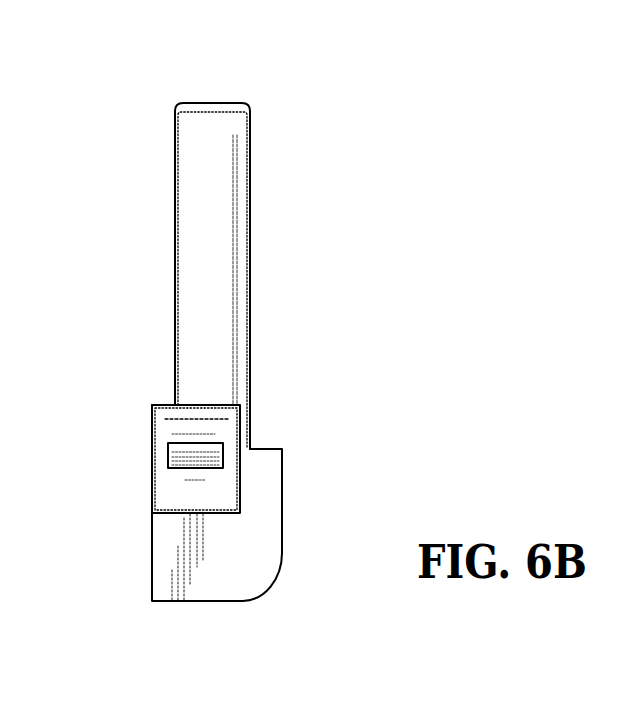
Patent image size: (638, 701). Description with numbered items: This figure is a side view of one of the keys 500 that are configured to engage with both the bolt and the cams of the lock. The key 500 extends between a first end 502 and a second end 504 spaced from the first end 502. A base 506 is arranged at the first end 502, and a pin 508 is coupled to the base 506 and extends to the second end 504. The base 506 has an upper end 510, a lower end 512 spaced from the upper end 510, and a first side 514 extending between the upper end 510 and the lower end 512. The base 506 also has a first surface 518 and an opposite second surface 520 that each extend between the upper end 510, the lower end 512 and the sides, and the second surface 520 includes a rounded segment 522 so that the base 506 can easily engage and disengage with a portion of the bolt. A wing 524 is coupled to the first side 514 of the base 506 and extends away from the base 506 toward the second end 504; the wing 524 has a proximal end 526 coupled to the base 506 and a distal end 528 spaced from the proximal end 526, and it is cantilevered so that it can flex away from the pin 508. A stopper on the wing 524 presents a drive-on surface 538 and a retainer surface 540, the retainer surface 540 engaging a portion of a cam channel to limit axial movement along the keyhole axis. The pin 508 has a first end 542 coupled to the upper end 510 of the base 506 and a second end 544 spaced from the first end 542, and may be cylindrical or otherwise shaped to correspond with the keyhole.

The key 500 is at (118, 81).
The first end 502 is at (183, 611).
The second end 504 is at (252, 101).
The base 506 is at (268, 473).
The pin 508 is at (220, 210).
The upper end 510 is at (268, 448).
The lower end 512 is at (167, 601).
The first side 514 is at (220, 540).
The first surface 518 is at (150, 525).
The second surface 520 is at (283, 517).
The rounded segment 522 is at (268, 587).
The wing 524 is at (160, 477).
The proximal end 526 is at (156, 510).
The distal end 528 is at (163, 405).
The drive-on surface 538 is at (192, 452).
The retainer surface 540 is at (182, 467).
The first end of pin 542 is at (240, 425).
The second end of pin 544 is at (203, 130).